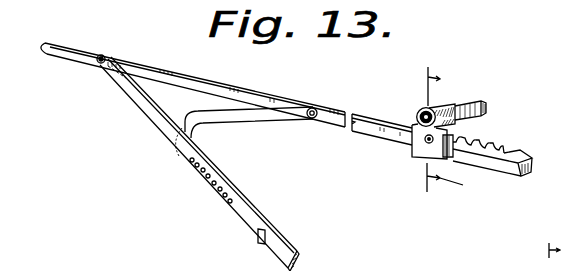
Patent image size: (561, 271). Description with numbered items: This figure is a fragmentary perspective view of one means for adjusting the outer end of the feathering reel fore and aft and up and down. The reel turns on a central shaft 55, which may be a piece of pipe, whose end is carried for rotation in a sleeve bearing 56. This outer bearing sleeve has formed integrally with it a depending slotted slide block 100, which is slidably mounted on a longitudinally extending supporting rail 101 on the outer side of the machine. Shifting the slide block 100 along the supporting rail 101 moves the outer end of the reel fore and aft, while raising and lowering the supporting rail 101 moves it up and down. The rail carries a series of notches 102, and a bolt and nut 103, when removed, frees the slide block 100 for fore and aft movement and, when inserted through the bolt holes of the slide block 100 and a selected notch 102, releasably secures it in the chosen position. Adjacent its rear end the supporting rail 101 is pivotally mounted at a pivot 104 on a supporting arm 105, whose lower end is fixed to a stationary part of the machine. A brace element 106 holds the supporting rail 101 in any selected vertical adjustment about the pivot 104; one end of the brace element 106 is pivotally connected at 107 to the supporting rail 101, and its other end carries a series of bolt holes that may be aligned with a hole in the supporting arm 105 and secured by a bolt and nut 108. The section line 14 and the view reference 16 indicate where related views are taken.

The section line 14- 14 is at (435, 129).
The view reference 16 is at (543, 252).
The central shaft 55 is at (473, 117).
The sleeve bearing 56 is at (450, 105).
The slide block 100 is at (412, 146).
The supporting rail 101 is at (331, 122).
The notches 102 is at (497, 158).
The bolt and nut 103 is at (430, 144).
The pivot 104 is at (317, 108).
The supporting arm 105 is at (243, 123).
The brace element 106 is at (154, 128).
The pivotal connection of brace 107 is at (105, 57).
The bolt and nut 108 is at (216, 178).